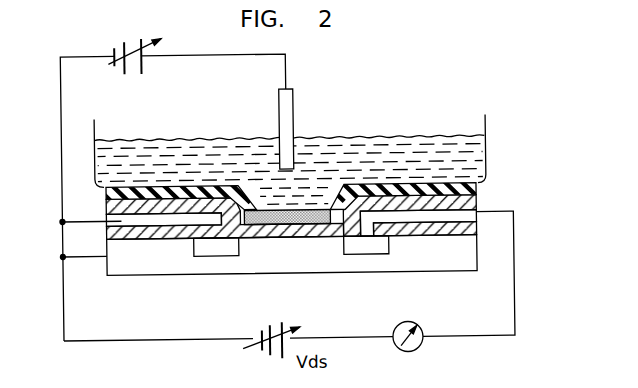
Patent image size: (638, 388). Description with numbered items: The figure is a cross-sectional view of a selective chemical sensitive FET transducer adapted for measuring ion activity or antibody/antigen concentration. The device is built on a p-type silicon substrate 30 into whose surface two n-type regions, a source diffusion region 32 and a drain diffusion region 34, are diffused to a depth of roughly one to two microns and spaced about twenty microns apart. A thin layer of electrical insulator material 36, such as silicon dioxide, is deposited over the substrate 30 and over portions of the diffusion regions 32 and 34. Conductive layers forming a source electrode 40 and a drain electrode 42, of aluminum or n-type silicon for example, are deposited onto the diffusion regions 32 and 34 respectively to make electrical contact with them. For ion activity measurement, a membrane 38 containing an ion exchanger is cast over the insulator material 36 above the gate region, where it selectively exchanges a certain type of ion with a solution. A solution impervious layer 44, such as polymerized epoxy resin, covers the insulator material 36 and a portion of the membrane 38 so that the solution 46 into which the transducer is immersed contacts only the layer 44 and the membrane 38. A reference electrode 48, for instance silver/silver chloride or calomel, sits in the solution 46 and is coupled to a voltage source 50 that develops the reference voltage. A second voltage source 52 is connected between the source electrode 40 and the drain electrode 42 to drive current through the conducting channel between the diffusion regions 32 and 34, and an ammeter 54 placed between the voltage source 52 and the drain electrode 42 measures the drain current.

The p-type silicon substrate 30 is at (264, 272).
The n-type source diffusion region 32 is at (208, 251).
The n-type drain diffusion region 34 is at (355, 256).
The electrical insulator material 36 is at (463, 208).
The membrane 38 is at (316, 214).
The source electrode 40 is at (112, 217).
The drain electrode 42 is at (421, 222).
The solution impervious layer 44 is at (390, 196).
The solution 46 is at (468, 162).
The reference electrode 48 is at (296, 116).
The voltage source 50 is at (163, 41).
The voltage source 52 is at (273, 360).
The ammeter 54 is at (420, 349).